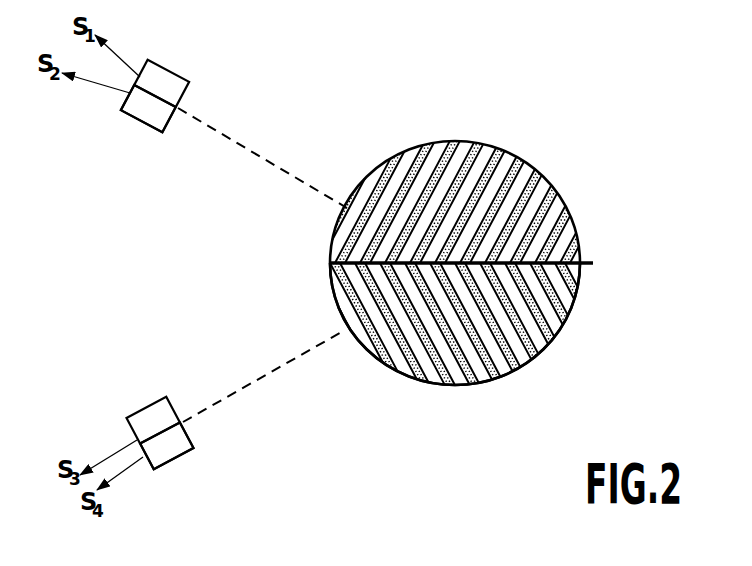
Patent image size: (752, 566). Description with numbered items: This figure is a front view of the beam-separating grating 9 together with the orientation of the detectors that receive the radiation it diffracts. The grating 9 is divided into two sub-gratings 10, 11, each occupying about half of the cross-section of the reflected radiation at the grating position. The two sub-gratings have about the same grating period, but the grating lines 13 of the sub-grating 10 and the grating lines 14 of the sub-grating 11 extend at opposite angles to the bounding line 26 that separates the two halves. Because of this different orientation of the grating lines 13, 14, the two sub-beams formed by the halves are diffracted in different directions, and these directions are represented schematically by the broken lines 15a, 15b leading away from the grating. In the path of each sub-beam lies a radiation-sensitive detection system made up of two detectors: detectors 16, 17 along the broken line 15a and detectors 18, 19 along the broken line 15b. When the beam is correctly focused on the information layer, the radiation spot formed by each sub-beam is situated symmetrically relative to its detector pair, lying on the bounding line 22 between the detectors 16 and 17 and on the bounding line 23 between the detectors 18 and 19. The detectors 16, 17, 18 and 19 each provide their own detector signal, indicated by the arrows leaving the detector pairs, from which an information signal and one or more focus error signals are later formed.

The grating 9 is at (609, 114).
The sub-grating 10 is at (520, 158).
The sub-grating 11 is at (455, 348).
The grating lines 13 is at (430, 142).
The grating lines 14 is at (470, 383).
The broken line 15a is at (258, 155).
The broken line 15b is at (267, 373).
The detector 16 is at (133, 77).
The detector 17 is at (132, 107).
The detector 18 is at (137, 433).
The detector 19 is at (170, 448).
The bounding line 22 is at (152, 90).
The bounding line 23 is at (153, 435).
The bounding line 26 is at (340, 268).